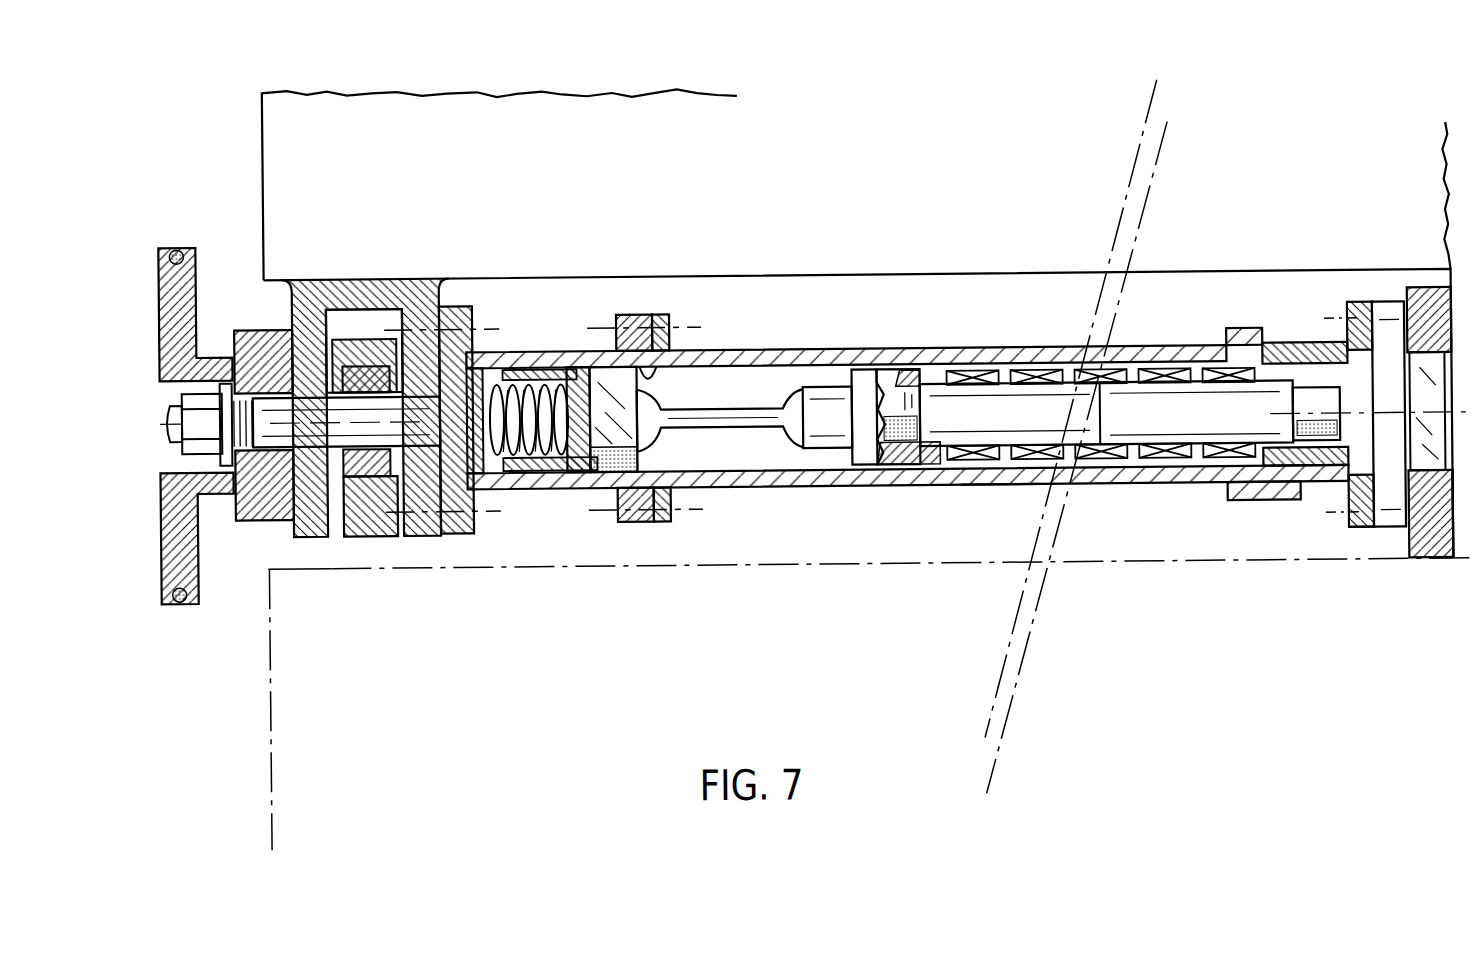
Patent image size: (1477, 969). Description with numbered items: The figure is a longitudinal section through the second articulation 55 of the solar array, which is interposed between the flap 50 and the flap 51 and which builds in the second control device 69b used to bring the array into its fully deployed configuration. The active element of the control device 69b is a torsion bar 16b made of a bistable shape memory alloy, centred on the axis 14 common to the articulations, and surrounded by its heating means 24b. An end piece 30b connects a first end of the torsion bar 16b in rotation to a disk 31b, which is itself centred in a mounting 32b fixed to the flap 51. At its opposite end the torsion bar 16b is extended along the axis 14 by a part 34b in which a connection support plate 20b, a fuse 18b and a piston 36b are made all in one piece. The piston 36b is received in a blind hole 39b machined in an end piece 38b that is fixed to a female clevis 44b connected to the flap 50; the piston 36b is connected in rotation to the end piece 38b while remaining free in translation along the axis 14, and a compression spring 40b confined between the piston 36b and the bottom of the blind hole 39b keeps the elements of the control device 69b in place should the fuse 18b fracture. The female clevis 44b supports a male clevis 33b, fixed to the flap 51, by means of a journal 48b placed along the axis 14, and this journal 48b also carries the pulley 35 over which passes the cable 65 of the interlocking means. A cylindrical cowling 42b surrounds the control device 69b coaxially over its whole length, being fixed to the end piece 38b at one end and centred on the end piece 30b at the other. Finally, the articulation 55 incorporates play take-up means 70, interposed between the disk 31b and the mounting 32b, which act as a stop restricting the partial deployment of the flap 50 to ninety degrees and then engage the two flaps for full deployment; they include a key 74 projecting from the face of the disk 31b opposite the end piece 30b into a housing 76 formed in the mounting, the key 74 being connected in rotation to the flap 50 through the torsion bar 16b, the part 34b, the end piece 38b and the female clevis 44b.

The flap 50 is at (268, 130).
The pulley 35 is at (183, 318).
The cable 65 is at (182, 608).
The second articulation 55 is at (252, 294).
The axis 14 is at (174, 437).
The female clevis 44b is at (312, 333).
The journal 48b is at (331, 452).
The male clevis 33b is at (386, 538).
The cylindrical cowling 42b is at (1025, 361).
The second control device 69b is at (997, 487).
The compression spring 40b is at (528, 376).
The end piece 38b is at (584, 493).
The blind hole 39b is at (671, 394).
The fuse 18b is at (758, 425).
The piston 36b is at (648, 449).
The part 34b is at (815, 390).
The connection support plate 20b is at (868, 450).
The torsion bar 16b is at (1113, 420).
The heating means 24b is at (1200, 475).
The end piece 30b is at (1338, 350).
The housing 76 is at (1391, 380).
The disk 31b is at (1382, 457).
The key 74 is at (1361, 537).
The mounting 32b is at (1431, 336).
The play take-up means 70 is at (1459, 480).
The flap 51 is at (268, 743).